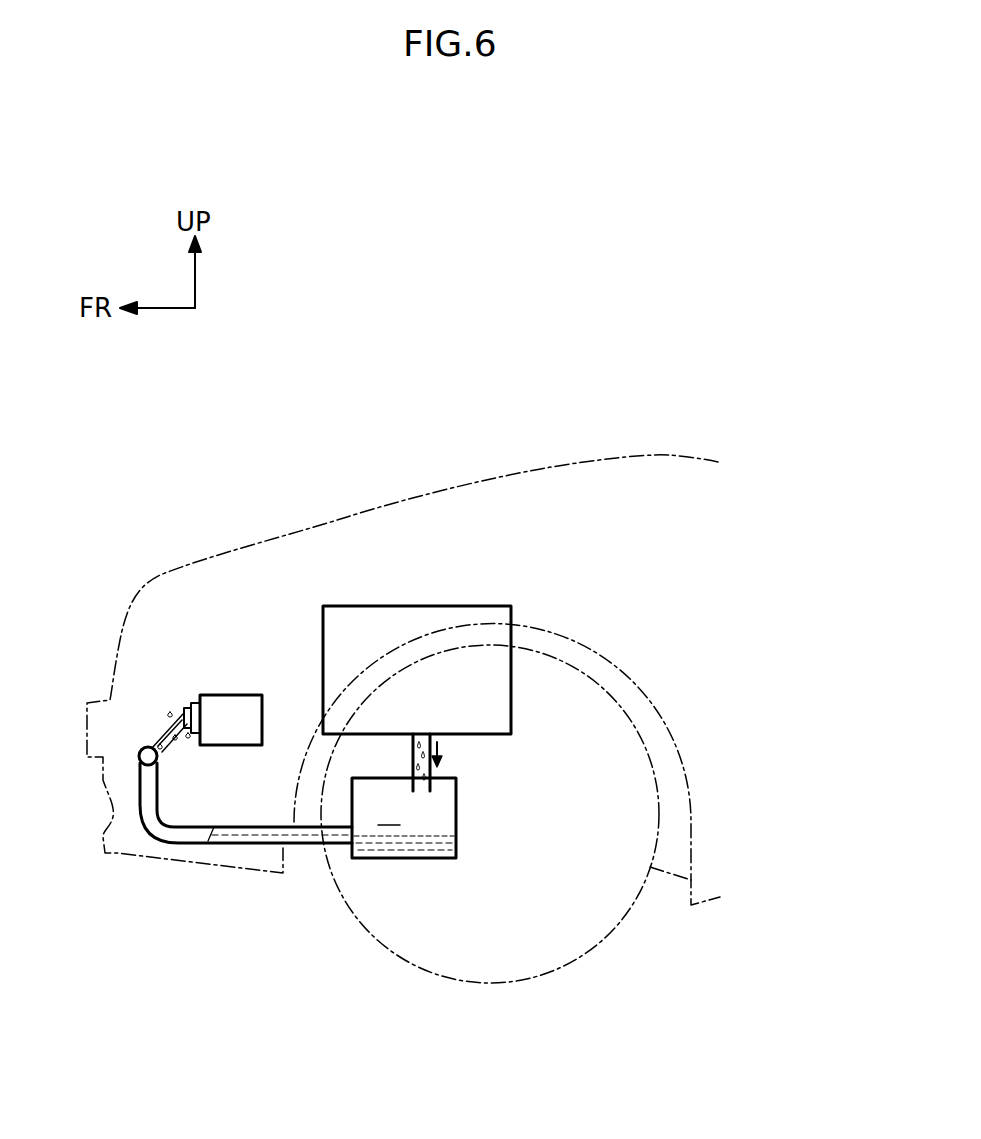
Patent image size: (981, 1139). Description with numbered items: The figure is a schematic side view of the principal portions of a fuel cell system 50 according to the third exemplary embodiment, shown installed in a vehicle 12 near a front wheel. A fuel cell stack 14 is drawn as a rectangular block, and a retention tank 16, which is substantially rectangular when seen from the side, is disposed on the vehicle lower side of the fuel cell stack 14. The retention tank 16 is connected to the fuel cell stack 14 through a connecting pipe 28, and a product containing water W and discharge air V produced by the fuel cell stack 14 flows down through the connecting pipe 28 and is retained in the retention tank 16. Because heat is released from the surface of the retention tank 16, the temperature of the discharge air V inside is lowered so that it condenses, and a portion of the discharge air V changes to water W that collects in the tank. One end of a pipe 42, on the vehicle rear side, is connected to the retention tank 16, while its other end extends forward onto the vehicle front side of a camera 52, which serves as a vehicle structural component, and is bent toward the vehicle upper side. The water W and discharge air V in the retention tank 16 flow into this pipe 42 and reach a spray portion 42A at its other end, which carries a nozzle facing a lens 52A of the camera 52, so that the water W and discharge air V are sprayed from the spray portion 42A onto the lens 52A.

The vehicle 12 is at (316, 377).
The fuel cell stack 14 is at (483, 606).
The retention tank 16 is at (408, 858).
The connecting pipe 28 is at (439, 772).
The pipe 42 is at (258, 845).
The spray portion 42A is at (137, 752).
The fuel cell system 50 is at (295, 581).
The camera 52 is at (250, 693).
The lens 52A is at (193, 705).
The discharge air V is at (163, 747).
The water W is at (155, 722).